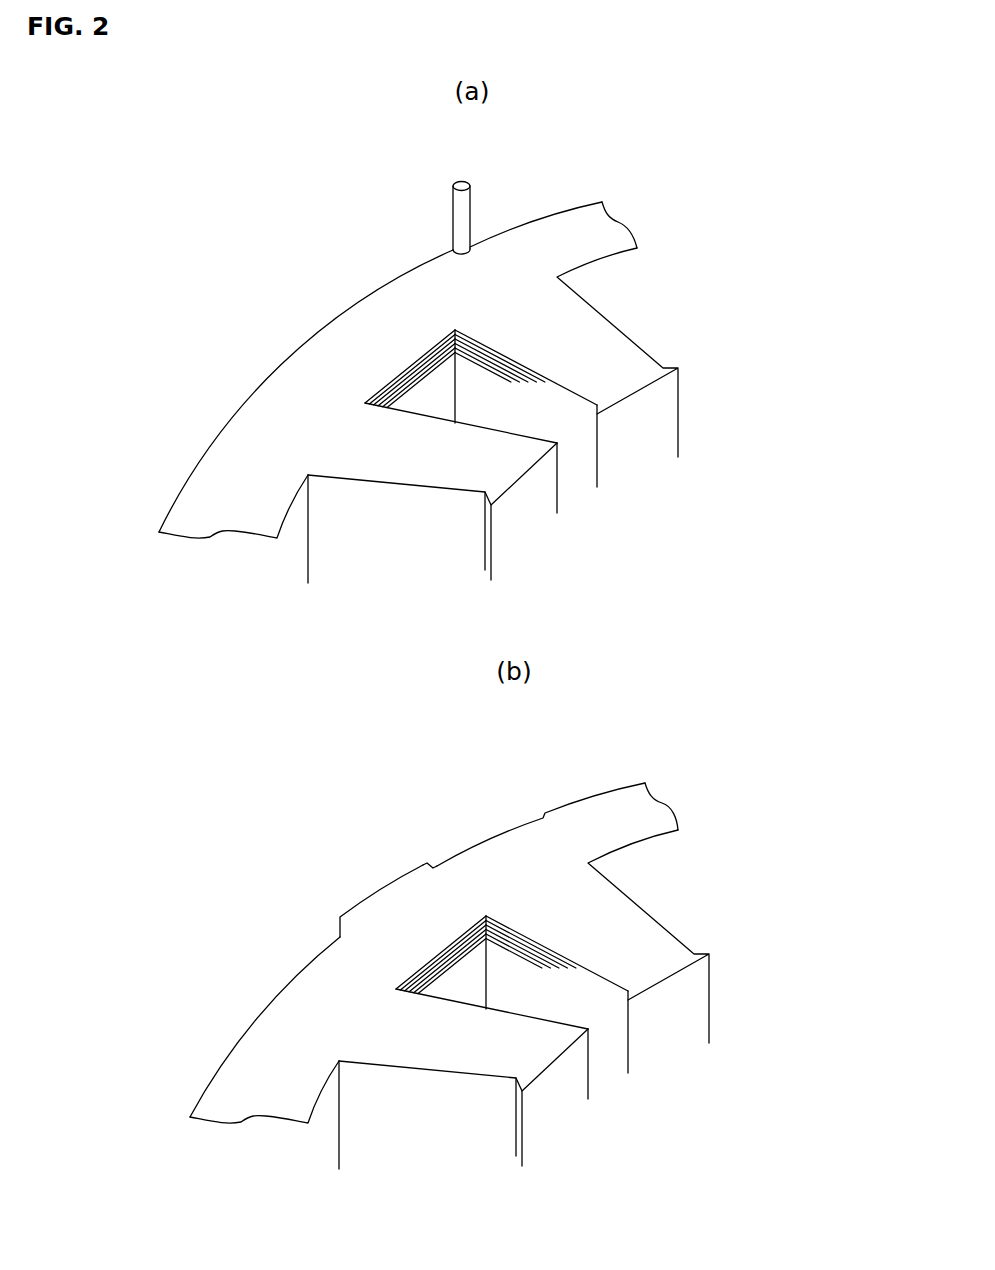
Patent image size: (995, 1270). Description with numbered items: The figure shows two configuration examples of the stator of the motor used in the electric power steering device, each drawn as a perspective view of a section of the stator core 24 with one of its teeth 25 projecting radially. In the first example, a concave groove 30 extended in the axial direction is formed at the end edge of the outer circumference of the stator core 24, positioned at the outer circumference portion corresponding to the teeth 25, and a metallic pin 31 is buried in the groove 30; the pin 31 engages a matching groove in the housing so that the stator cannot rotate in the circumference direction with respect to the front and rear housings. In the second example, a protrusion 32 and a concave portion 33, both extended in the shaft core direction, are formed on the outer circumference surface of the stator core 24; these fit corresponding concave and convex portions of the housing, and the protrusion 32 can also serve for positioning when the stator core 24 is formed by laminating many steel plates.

The stator core 24 is at (333, 387).
The teeth 25 is at (612, 345).
The concave groove 30 is at (510, 223).
The pin 31 is at (453, 203).
The protrusion 32 is at (362, 902).
The concave portion 33 is at (515, 835).